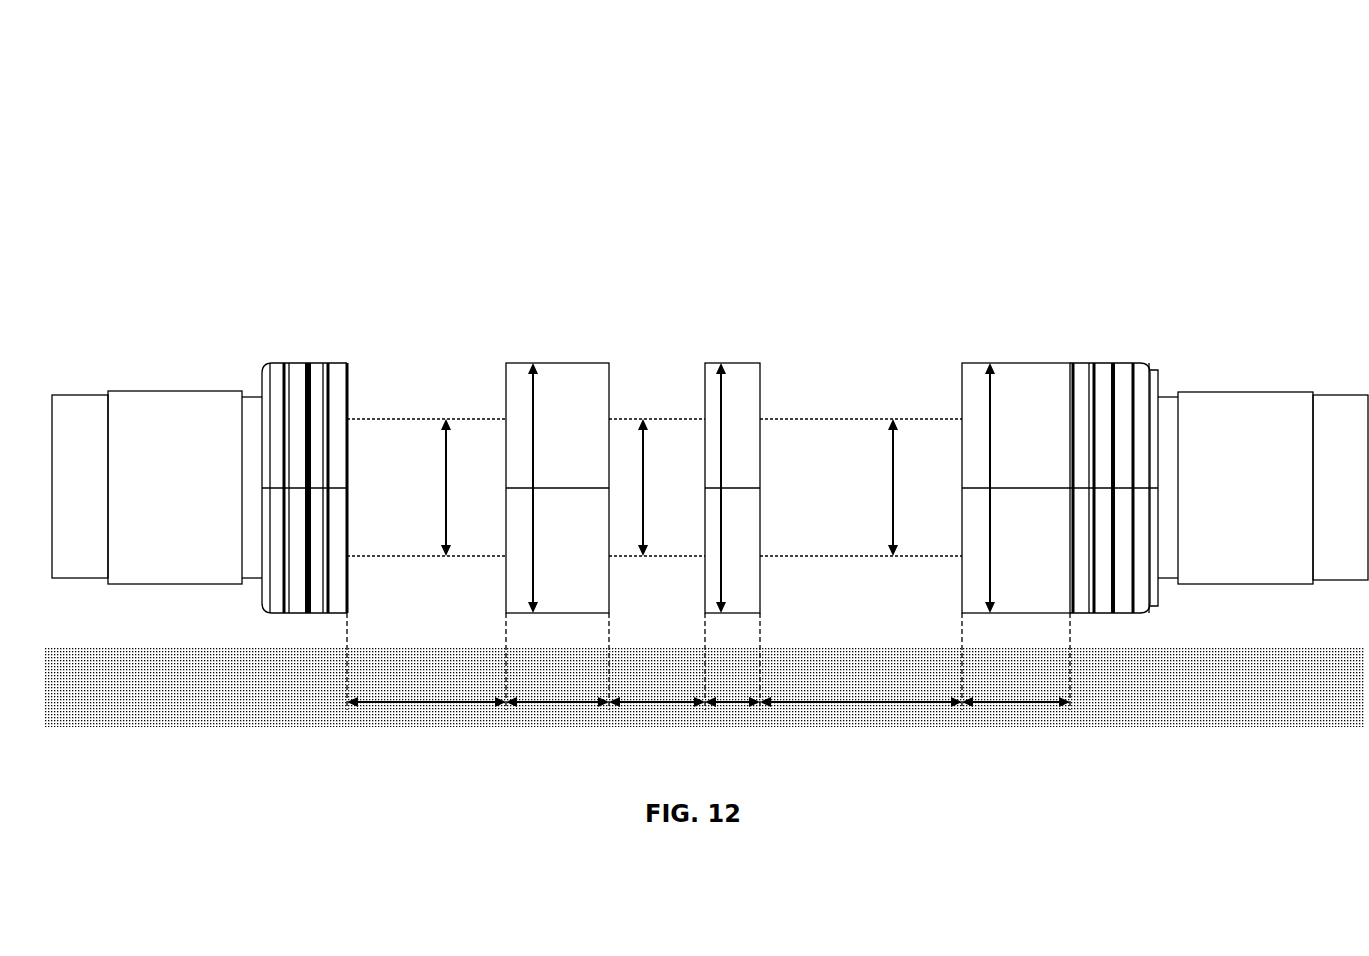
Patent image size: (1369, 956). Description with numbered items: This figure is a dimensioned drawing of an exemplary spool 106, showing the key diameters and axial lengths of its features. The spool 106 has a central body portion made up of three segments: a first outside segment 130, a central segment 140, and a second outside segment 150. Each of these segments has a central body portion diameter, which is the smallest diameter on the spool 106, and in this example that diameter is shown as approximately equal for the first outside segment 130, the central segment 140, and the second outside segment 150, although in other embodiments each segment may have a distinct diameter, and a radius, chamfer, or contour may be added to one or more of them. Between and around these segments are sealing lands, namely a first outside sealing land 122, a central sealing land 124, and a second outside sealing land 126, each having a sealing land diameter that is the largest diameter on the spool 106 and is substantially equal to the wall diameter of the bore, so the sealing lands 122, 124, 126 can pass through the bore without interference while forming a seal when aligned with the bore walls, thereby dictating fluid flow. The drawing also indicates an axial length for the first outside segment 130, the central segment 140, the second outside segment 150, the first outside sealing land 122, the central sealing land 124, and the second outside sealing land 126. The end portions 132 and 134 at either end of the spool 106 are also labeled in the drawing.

The spool 106 is at (86, 122).
The first outside sealing land 122 is at (557, 363).
The central sealing land 124 is at (743, 363).
The second outside sealing land 126 is at (1042, 363).
The first outside segment 130 is at (404, 415).
The first knurled end portion 132 is at (318, 363).
The second knurled end portion 134 is at (1123, 363).
The central segment 140 is at (673, 415).
The second outside segment 150 is at (857, 415).